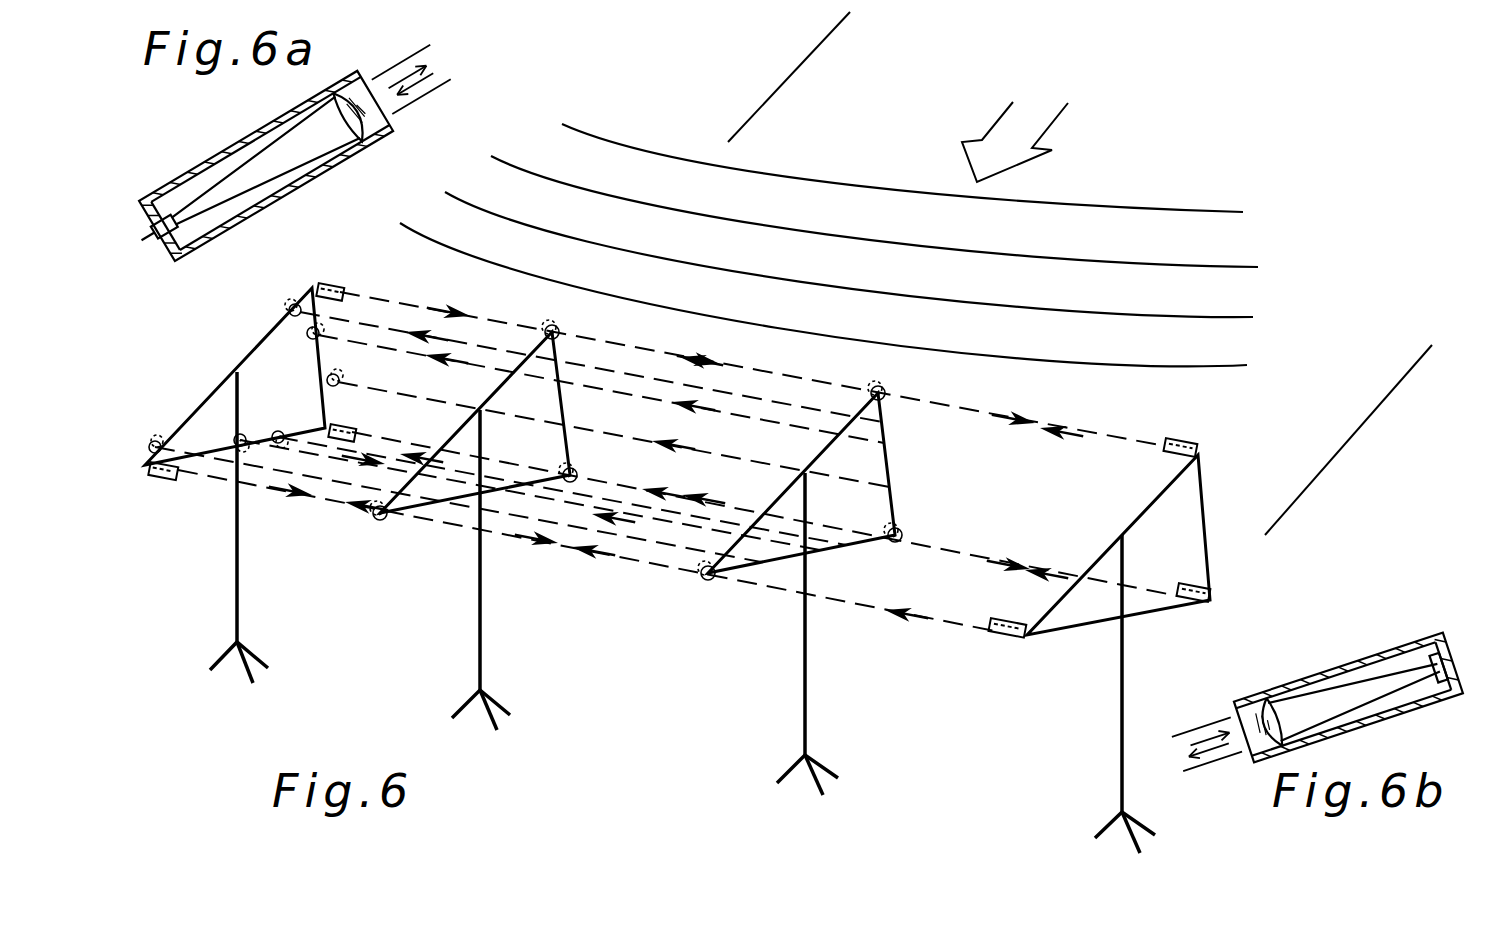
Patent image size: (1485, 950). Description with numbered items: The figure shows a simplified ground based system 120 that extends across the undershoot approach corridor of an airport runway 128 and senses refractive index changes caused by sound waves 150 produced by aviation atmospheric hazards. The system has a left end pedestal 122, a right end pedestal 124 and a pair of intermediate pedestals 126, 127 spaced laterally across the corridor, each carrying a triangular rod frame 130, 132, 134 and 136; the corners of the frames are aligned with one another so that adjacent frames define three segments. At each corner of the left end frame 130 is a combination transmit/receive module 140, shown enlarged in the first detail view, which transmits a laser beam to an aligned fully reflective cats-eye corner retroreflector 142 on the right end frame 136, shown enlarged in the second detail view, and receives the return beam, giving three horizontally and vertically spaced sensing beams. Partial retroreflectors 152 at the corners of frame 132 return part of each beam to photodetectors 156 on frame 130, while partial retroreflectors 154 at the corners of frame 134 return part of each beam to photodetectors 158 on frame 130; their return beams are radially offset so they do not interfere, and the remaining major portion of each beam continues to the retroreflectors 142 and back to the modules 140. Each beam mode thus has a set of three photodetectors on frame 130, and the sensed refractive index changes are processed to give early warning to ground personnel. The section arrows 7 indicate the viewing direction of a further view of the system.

In FIG. 6, the section line / view arrow 7 is at (1085, 858).
In FIG. 6, the ground based system 120 is at (692, 734).
In FIG. 6, the left end pedestal 122 is at (237, 562).
In FIG. 6, the right end pedestal 124 is at (1122, 715).
In FIG. 6, the intermediate pedestal 126 is at (480, 627).
In FIG. 6, the intermediate pedestal 127 is at (805, 670).
In FIG. 6, the airport runway 128 is at (903, 811).
In FIG. 6, the triangular rod frame 130 is at (256, 351).
In FIG. 6, the triangular rod frame 132 is at (546, 482).
In FIG. 6, the triangular rod frame 134 is at (836, 550).
In FIG. 6, the triangular rod frame 136 is at (1205, 500).
In FIG. 6, the transmit/receive module 140 is at (343, 288).
In FIG. 6A, the transmit/receive module 140 is at (286, 118).
In FIG. 6, the fully reflective corner retroreflector 142 is at (1200, 456).
In FIG. 6B, the fully reflective corner retroreflector 142 is at (1281, 689).
In FIG. 6, the sound waves 150 is at (1180, 213).
In FIG. 6, the partial retroreflector 152 is at (560, 330).
In FIG. 6, the partial retroreflector 154 is at (886, 390).
In FIG. 6, the photodetector 156 is at (309, 336).
In FIG. 6, the photodetector 158 is at (344, 362).